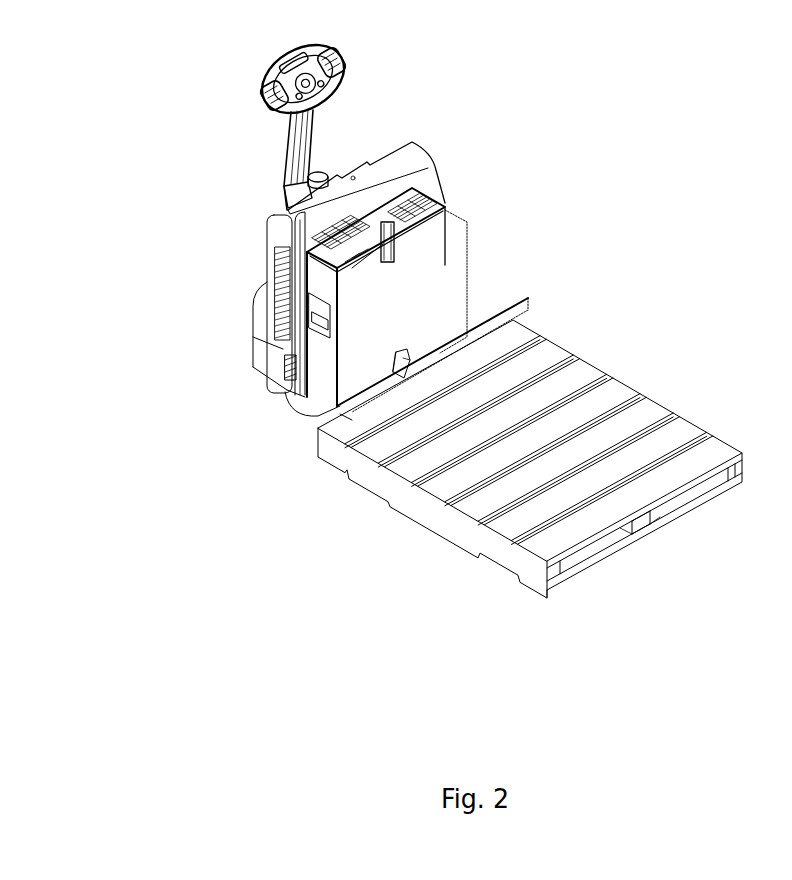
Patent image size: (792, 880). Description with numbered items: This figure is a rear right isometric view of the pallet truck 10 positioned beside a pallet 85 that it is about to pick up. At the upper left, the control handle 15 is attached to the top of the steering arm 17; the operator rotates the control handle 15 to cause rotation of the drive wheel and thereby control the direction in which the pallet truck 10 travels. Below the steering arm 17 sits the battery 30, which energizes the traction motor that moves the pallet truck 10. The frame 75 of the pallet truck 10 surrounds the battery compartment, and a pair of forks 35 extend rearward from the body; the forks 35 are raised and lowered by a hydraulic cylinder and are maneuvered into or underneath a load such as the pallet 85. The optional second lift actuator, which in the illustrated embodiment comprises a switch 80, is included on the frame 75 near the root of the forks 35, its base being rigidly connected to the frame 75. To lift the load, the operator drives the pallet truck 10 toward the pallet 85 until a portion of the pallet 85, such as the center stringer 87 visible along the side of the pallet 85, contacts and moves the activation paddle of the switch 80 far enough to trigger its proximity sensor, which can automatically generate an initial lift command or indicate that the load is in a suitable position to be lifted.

The pallet truck 10 is at (508, 128).
The control handle 15 is at (263, 88).
The steering arm 17 is at (293, 162).
The battery 30 is at (433, 198).
The forks 35 is at (490, 319).
The frame 75 is at (397, 145).
The switch 80 is at (417, 348).
The pallet 85 is at (599, 349).
The center stringer 87 is at (640, 527).